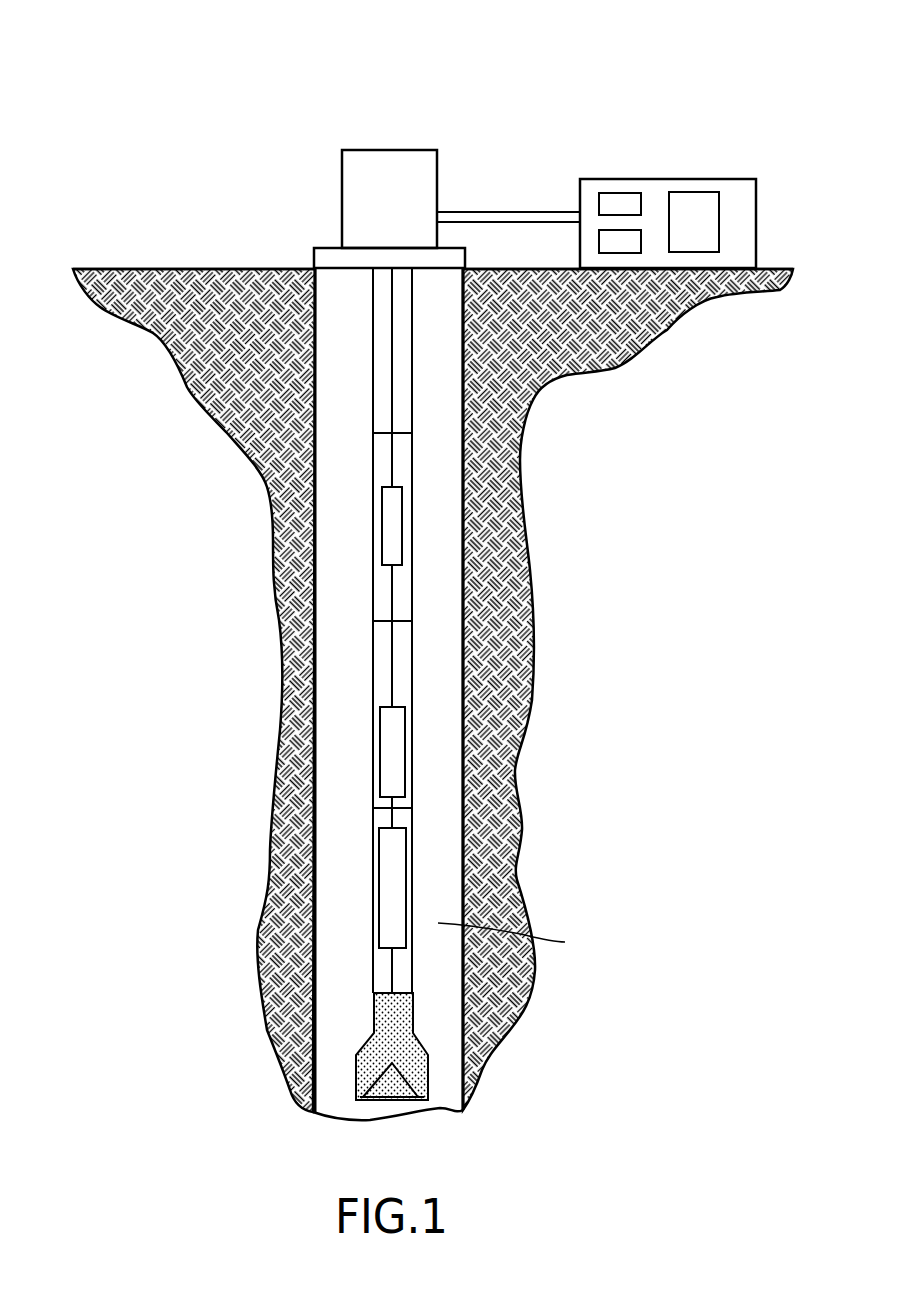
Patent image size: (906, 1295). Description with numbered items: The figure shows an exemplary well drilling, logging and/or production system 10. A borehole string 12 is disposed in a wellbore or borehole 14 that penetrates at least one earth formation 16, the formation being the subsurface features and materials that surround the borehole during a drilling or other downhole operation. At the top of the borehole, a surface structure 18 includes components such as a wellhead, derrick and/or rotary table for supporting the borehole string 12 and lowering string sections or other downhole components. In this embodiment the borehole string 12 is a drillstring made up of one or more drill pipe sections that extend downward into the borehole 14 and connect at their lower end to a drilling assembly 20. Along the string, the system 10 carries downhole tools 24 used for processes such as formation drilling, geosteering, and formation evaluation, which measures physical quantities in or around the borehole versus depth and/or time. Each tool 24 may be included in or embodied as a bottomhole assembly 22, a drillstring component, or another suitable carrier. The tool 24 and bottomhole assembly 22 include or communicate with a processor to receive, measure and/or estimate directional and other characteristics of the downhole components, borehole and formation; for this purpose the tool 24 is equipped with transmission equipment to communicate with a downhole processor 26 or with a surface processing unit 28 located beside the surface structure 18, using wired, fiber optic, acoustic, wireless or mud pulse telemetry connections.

The well drilling, logging and/or production system 10 is at (118, 108).
The borehole string 12 is at (368, 618).
The borehole 14 is at (447, 565).
The earth formation 16 is at (232, 388).
The surface structure 18 is at (388, 150).
The drilling assembly 20 is at (408, 995).
The bottomhole assembly 22 is at (519, 941).
The downhole tool 24 is at (405, 752).
The downhole processor 26 is at (402, 525).
The surface processing unit 28 is at (727, 179).